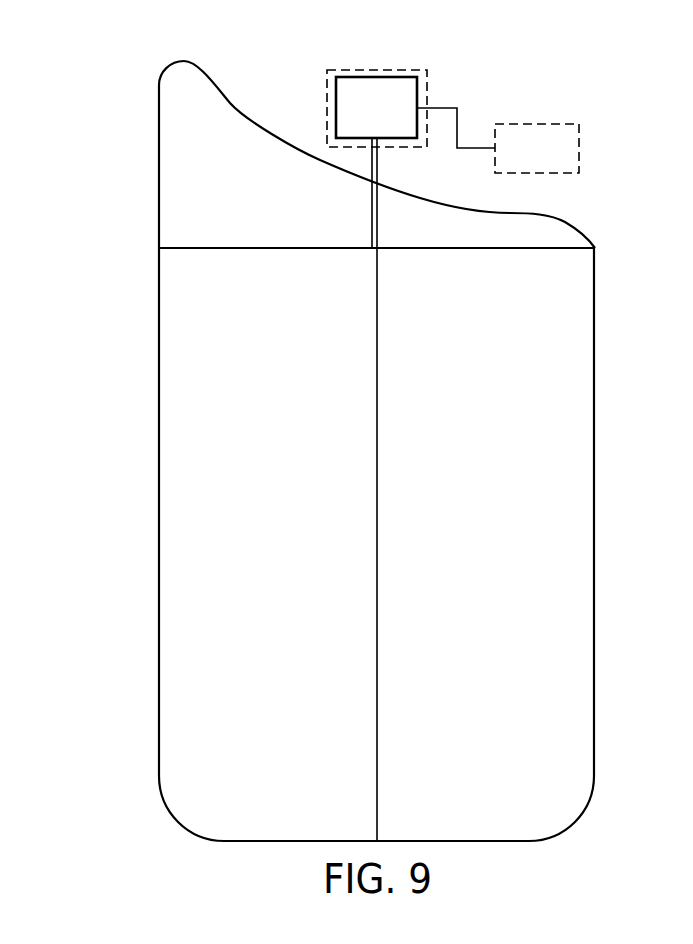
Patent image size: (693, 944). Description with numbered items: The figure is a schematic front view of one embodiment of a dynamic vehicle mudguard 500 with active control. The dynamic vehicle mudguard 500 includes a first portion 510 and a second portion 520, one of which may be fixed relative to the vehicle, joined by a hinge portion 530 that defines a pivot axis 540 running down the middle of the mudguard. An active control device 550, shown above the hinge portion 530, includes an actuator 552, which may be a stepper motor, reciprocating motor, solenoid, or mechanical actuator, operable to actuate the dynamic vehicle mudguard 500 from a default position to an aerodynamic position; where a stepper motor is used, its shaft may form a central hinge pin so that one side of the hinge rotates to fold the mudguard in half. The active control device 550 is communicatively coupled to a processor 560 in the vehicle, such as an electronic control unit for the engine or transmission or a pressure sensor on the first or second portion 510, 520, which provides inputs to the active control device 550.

The dynamic vehicle mudguard 500 is at (130, 132).
The first portion 510 is at (159, 414).
The second portion 520 is at (594, 414).
The hinge portion 530 is at (383, 448).
The pivot axis 540 is at (377, 683).
The active control device 550 is at (397, 62).
The actuator 552 is at (378, 163).
The processor 560 is at (546, 124).